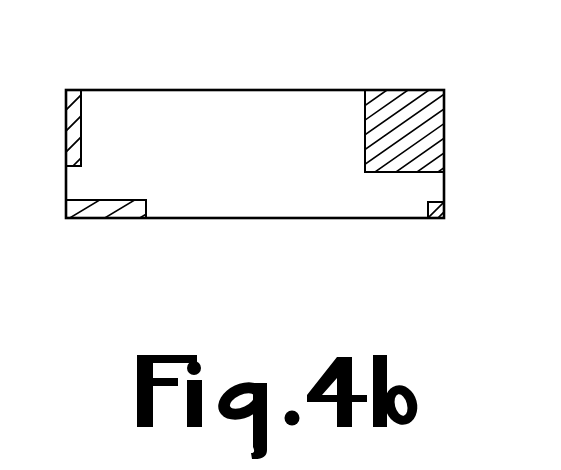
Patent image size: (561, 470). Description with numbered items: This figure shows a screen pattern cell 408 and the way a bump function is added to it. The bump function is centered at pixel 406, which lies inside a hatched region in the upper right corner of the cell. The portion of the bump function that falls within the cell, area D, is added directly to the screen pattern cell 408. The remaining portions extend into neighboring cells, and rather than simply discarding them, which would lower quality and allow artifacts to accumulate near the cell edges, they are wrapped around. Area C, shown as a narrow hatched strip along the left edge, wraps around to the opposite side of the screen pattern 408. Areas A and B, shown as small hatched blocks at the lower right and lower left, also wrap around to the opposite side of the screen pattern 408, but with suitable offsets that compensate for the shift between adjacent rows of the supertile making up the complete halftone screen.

The screen pattern cell 408 is at (203, 90).
The pixel 406 is at (395, 145).
The area A is at (428, 210).
The area B is at (98, 200).
The area C is at (67, 152).
The area D is at (365, 163).